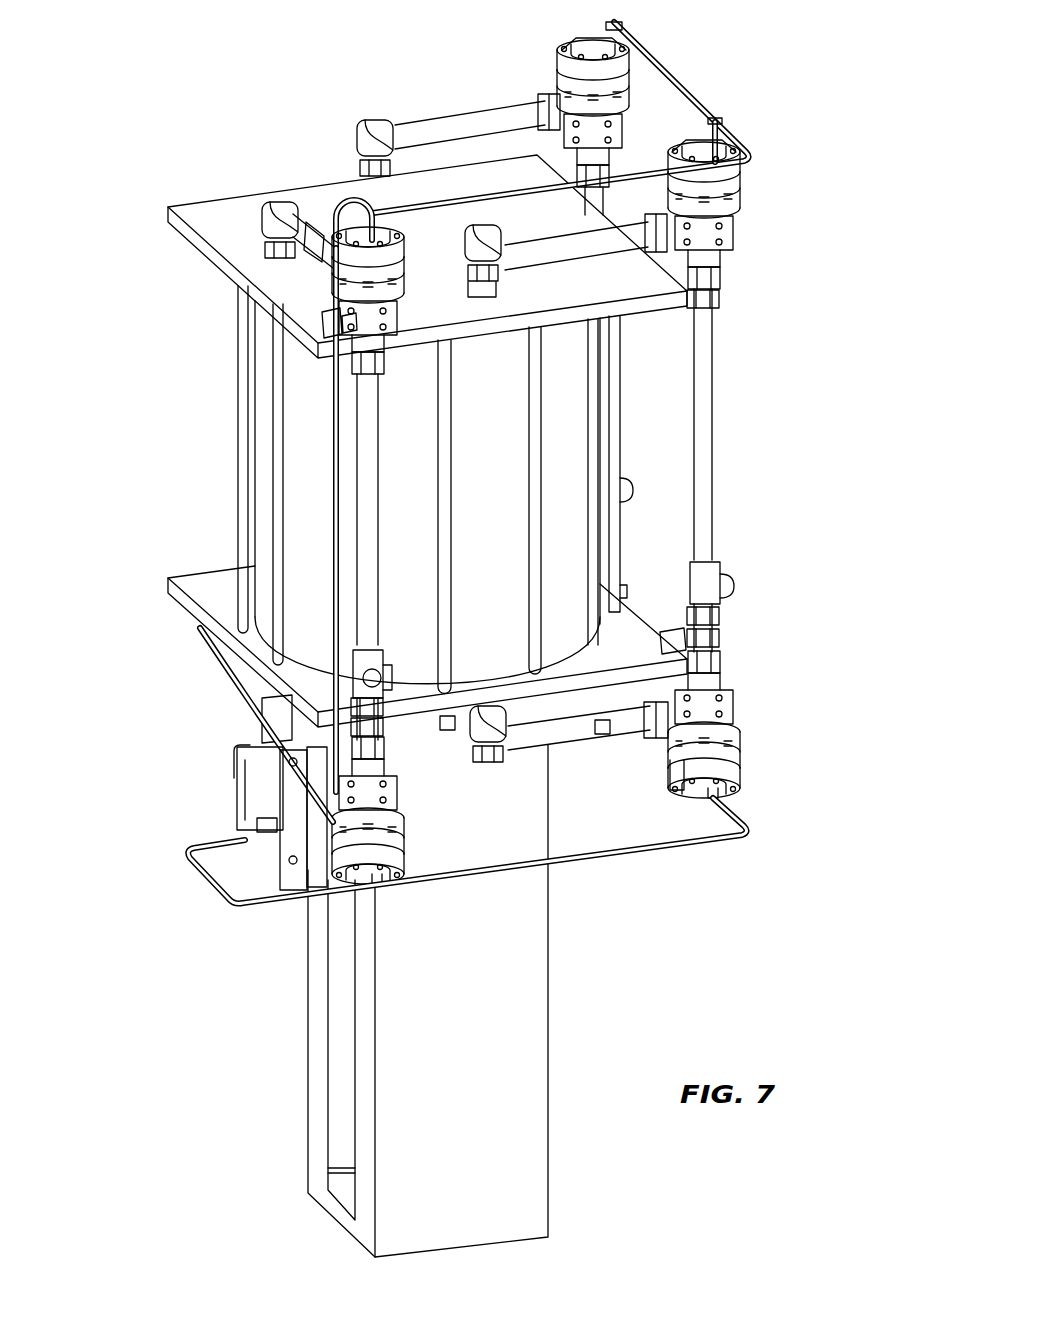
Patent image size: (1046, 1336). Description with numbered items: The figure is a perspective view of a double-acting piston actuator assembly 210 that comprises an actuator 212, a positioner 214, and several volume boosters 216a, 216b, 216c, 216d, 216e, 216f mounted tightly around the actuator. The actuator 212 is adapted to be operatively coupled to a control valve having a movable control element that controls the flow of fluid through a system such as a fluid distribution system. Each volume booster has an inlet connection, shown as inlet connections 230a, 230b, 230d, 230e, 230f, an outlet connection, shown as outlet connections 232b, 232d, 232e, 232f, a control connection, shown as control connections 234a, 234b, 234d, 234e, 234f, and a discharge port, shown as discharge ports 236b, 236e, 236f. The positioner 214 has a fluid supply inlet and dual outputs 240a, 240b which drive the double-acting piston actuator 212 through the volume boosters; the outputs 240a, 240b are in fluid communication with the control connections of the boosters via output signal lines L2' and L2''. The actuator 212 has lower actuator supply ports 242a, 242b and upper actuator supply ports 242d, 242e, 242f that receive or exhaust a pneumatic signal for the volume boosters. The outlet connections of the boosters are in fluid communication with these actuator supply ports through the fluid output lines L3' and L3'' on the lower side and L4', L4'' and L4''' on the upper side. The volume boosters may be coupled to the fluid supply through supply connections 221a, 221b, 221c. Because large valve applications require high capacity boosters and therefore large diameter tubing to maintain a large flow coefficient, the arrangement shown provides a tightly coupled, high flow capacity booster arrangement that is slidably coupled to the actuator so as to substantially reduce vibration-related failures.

The double-acting piston actuator assembly 210 is at (112, 300).
The actuator 212 is at (548, 953).
The positioner 214 is at (250, 792).
The volume booster 216a is at (406, 822).
The volume booster 216b is at (742, 740).
The volume booster 216c is at (624, 590).
The volume booster 216d is at (402, 237).
The volume booster 216e is at (740, 207).
The volume booster 216f is at (628, 70).
The supply connection 221a is at (388, 675).
The supply connection 221b is at (734, 584).
The supply connection 221c is at (627, 487).
The inlet connection 230a is at (385, 762).
The inlet connection 230b is at (714, 676).
The inlet connection 230d is at (378, 336).
The inlet connection 230e is at (716, 261).
The inlet connection 230f is at (605, 138).
The outlet connection 232b is at (660, 746).
The outlet connection 232d is at (318, 261).
The outlet connection 232e is at (645, 235).
The outlet connection 232f is at (540, 102).
The control connection 234a is at (381, 884).
The control connection 234b is at (718, 798).
The control connection 234d is at (350, 205).
The control connection 234e is at (722, 125).
The control connection 234f is at (620, 24).
The discharge port 236b is at (672, 782).
The discharge port 236e is at (740, 175).
The discharge port 236f is at (556, 64).
The output 240a is at (245, 757).
The output 240b is at (250, 829).
The lower actuator supply port 242a is at (268, 710).
The lower actuator supply port 242b is at (495, 764).
The upper actuator supply port 242d is at (266, 257).
The upper actuator supply port 242e is at (484, 298).
The upper actuator supply port 242f is at (392, 176).
The output signal line L2' is at (467, 856).
The output signal line L2'' is at (310, 520).
The fluid output line L3' is at (579, 745).
The fluid output line L3'' is at (227, 725).
The fluid output line L4' is at (576, 261).
The fluid output line L4'' is at (470, 97).
The fluid output line L4''' is at (295, 196).